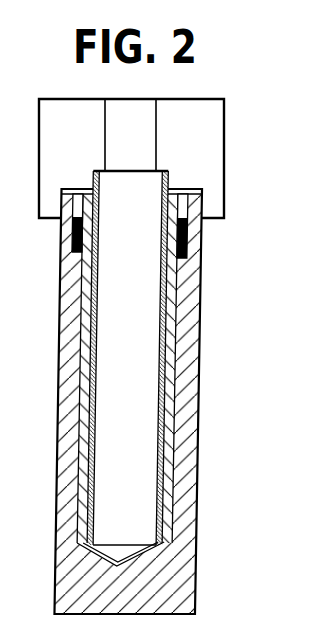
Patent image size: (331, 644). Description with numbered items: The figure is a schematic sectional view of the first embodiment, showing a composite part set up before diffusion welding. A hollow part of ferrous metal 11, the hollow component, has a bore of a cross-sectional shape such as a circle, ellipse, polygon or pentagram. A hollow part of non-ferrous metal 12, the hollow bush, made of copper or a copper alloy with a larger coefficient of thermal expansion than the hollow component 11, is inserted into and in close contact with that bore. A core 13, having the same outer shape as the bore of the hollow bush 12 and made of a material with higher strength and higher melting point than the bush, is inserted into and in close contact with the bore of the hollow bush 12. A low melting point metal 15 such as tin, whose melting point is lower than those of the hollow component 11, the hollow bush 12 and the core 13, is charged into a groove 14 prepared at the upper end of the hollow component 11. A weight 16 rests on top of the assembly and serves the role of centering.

The hollow part of ferrous metal 11 is at (185, 503).
The hollow part of non-ferrous metal 12 is at (170, 345).
The core 13 is at (163, 312).
The groove 14 is at (182, 208).
The low melting point metal 15 is at (185, 243).
The weight 16 is at (218, 132).